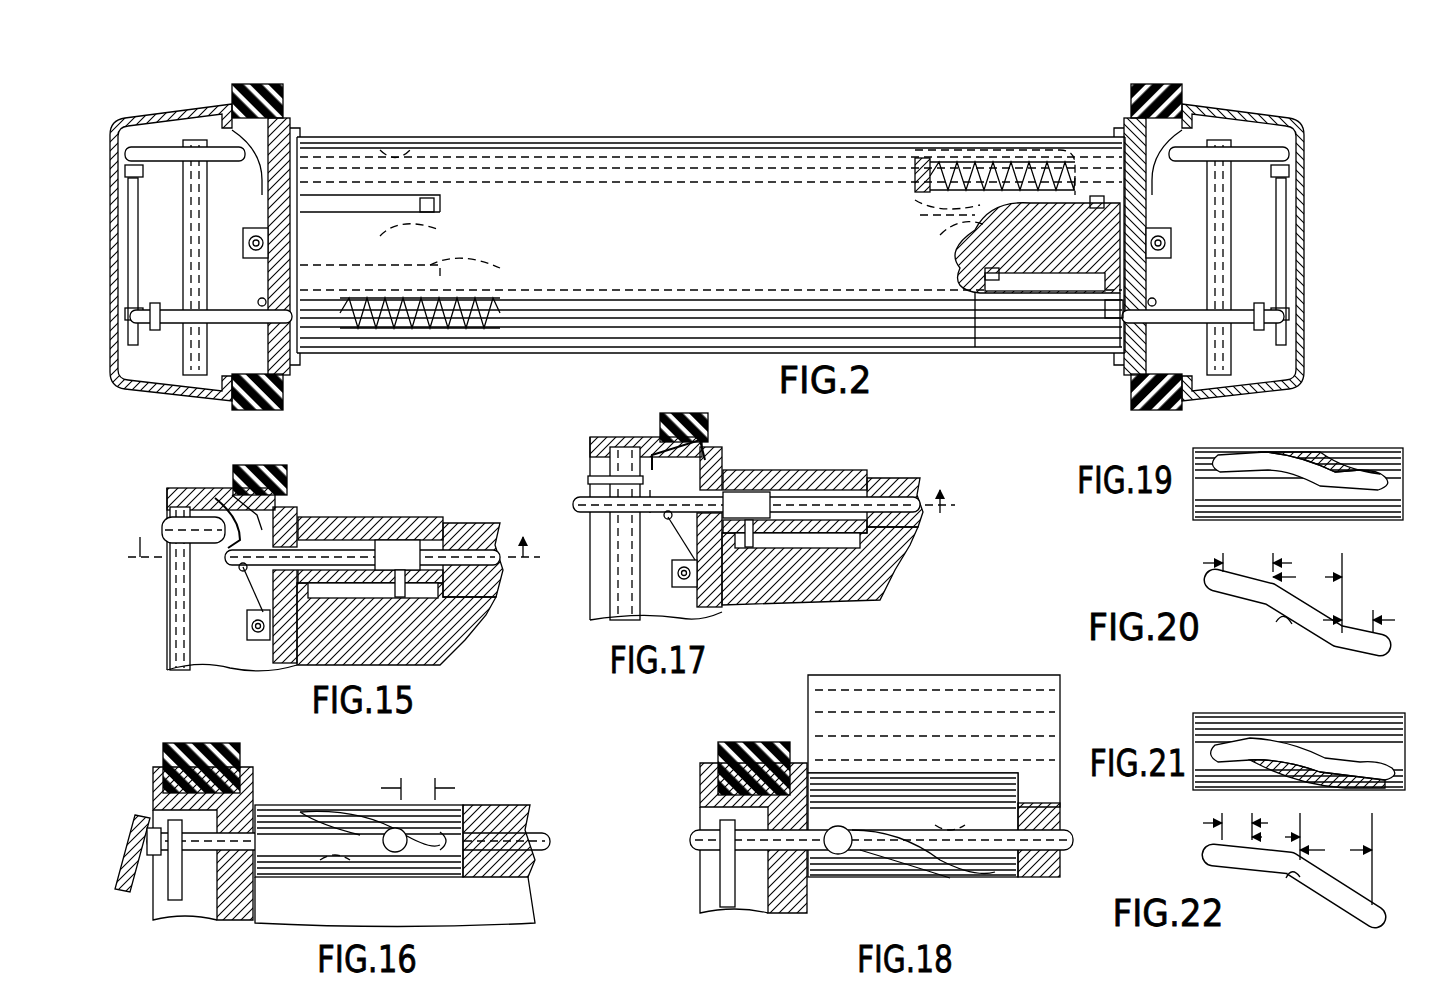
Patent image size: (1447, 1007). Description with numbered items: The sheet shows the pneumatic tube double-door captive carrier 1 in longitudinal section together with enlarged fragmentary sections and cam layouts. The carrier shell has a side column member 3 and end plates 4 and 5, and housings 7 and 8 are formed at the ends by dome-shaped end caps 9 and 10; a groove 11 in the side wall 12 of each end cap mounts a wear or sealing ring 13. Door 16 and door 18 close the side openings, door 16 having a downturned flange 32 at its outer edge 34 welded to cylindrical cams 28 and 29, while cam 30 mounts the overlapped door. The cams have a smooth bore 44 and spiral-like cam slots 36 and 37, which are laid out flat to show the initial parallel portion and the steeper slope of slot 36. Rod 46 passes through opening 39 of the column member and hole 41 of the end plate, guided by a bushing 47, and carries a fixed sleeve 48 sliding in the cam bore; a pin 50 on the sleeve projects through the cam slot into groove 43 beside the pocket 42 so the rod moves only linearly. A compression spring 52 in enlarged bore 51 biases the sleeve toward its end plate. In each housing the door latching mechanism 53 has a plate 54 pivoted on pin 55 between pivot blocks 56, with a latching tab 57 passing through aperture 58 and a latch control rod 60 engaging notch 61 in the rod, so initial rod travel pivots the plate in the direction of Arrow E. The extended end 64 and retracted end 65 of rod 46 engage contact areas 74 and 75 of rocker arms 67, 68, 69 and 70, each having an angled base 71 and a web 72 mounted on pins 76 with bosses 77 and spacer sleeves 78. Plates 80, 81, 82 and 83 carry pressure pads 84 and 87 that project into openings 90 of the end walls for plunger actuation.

In FIG. 2, the carrier 1 is at (770, 125).
In FIG. 2, the side column member 3 is at (600, 290).
In FIG. 15, the side column member 3 is at (425, 630).
In FIG. 17, the side column member 3 is at (880, 560).
In FIG. 2, the end plate 4 is at (1125, 150).
In FIG. 2, the end plate 5 is at (292, 130).
In FIG. 15, the end plate 5 is at (285, 663).
In FIG. 17, the end plate 5 is at (712, 607).
In FIG. 16, the end plate 5 is at (235, 912).
In FIG. 18, the end plate 5 is at (790, 897).
In FIG. 2, the housing 7 is at (1310, 130).
In FIG. 2, the housing 8 is at (145, 120).
In FIG. 2, the end cap 9 is at (1300, 345).
In FIG. 2, the end cap 10 is at (135, 380).
In FIG. 2, the groove 11 is at (257, 410).
In FIG. 16, the groove 11 is at (175, 775).
In FIG. 18, the groove 11 is at (722, 765).
In FIG. 2, the side wall 12 is at (217, 395).
In FIG. 17, the side wall 12 is at (635, 435).
In FIG. 2, the wear or sealing ring 13 is at (270, 90).
In FIG. 15, the wear or sealing ring 13 is at (280, 472).
In FIG. 17, the wear or sealing ring 13 is at (700, 418).
In FIG. 16, the wear or sealing ring 13 is at (190, 750).
In FIG. 18, the wear or sealing ring 13 is at (755, 745).
In FIG. 2, the door 16 is at (565, 137).
In FIG. 15, the door 16 is at (470, 520).
In FIG. 17, the door 16 is at (797, 506).
In FIG. 16, the door 16 is at (520, 905).
In FIG. 18, the door 16 is at (1000, 685).
In FIG. 2, the door 18 is at (880, 353).
In FIG. 2, the cam 28 is at (1000, 155).
In FIG. 19, the cam 28 is at (1355, 450).
In FIG. 2, the cam 29 is at (420, 160).
In FIG. 15, the cam 29 is at (380, 520).
In FIG. 17, the cam 29 is at (845, 475).
In FIG. 16, the cam 29 is at (460, 805).
In FIG. 18, the cam 29 is at (1010, 878).
In FIG. 21, the cam 30 is at (1345, 715).
In FIG. 2, the downturned flange 32 is at (373, 140).
In FIG. 15, the downturned flange 32 is at (405, 520).
In FIG. 17, the downturned flange 32 is at (780, 470).
In FIG. 16, the downturned flange 32 is at (425, 877).
In FIG. 18, the downturned flange 32 is at (900, 780).
In FIG. 2, the outer edge 34 is at (720, 137).
In FIG. 16, the outer edge 34 is at (545, 855).
In FIG. 18, the outer edge 34 is at (1038, 775).
In FIG. 15, the cam slot 36 is at (430, 587).
In FIG. 17, the cam slot 36 is at (790, 548).
In FIG. 16, the cam slot 36 is at (345, 815).
In FIG. 18, the cam slot 36 is at (893, 862).
In FIG. 19, the cam slot 36 is at (1345, 495).
In FIG. 20, the cam slot 36 is at (1284, 626).
In FIG. 21, the cam slot 37 is at (1240, 740).
In FIG. 22, the cam slot 37 is at (1292, 882).
In FIG. 2, the opening 39 is at (715, 180).
In FIG. 15, the opening 39 is at (485, 555).
In FIG. 17, the opening 39 is at (915, 500).
In FIG. 16, the opening 39 is at (505, 835).
In FIG. 18, the opening 39 is at (1065, 850).
In FIG. 16, the hole 41 is at (225, 865).
In FIG. 18, the hole 41 is at (790, 860).
In FIG. 2, the pocket 42 is at (960, 207).
In FIG. 15, the pocket 42 is at (420, 577).
In FIG. 17, the pocket 42 is at (870, 540).
In FIG. 2, the groove 43 is at (400, 235).
In FIG. 15, the groove 43 is at (365, 600).
In FIG. 17, the groove 43 is at (850, 548).
In FIG. 2, the bore 44 is at (395, 158).
In FIG. 15, the bore 44 is at (330, 585).
In FIG. 17, the bore 44 is at (860, 495).
In FIG. 16, the bore 44 is at (330, 860).
In FIG. 18, the bore 44 is at (950, 825).
In FIG. 19, the bore 44 is at (1395, 505).
In FIG. 21, the bore 44 is at (1400, 742).
In FIG. 2, the rod 46 is at (630, 165).
In FIG. 15, the rod 46 is at (480, 562).
In FIG. 17, the rod 46 is at (895, 505).
In FIG. 16, the rod 46 is at (548, 842).
In FIG. 18, the rod 46 is at (672, 848).
In FIG. 2, the bushing 47 is at (290, 300).
In FIG. 17, the bushing 47 is at (712, 490).
In FIG. 16, the bushing 47 is at (240, 825).
In FIG. 18, the bushing 47 is at (800, 862).
In FIG. 2, the sleeve 48 is at (392, 176).
In FIG. 15, the sleeve 48 is at (405, 545).
In FIG. 17, the sleeve 48 is at (760, 500).
In FIG. 16, the sleeve 48 is at (432, 848).
In FIG. 18, the sleeve 48 is at (855, 820).
In FIG. 2, the pin 50 is at (436, 212).
In FIG. 15, the pin 50 is at (400, 592).
In FIG. 17, the pin 50 is at (748, 548).
In FIG. 16, the pin 50 is at (395, 850).
In FIG. 18, the pin 50 is at (840, 852).
In FIG. 2, the enlarged bore 51 is at (920, 160).
In FIG. 2, the compression spring 52 is at (940, 162).
In FIG. 2, the door latching mechanism 53 is at (240, 243).
In FIG. 2, the plate 54 is at (1140, 282).
In FIG. 15, the plate 54 is at (190, 497).
In FIG. 2, the pin 55 is at (262, 245).
In FIG. 15, the pin 55 is at (258, 645).
In FIG. 17, the pin 55 is at (684, 590).
In FIG. 15, the pivot block 56 is at (258, 640).
In FIG. 2, the latching tab 57 is at (298, 137).
In FIG. 15, the latching tab 57 is at (235, 495).
In FIG. 17, the latching tab 57 is at (680, 440).
In FIG. 2, the aperture 58 is at (295, 380).
In FIG. 15, the aperture 58 is at (297, 510).
In FIG. 17, the aperture 58 is at (715, 455).
In FIG. 2, the door latch control rod 60 is at (1150, 308).
In FIG. 15, the door latch control rod 60 is at (243, 568).
In FIG. 17, the door latch control rod 60 is at (668, 522).
In FIG. 16, the door latch control rod 60 is at (175, 900).
In FIG. 18, the door latch control rod 60 is at (725, 897).
In FIG. 15, the notch 61 is at (248, 563).
In FIG. 17, the notch 61 is at (600, 517).
In FIG. 16, the notch 61 is at (163, 840).
In FIG. 2, the extended end 64 is at (1295, 192).
In FIG. 2, the retracted end 65 is at (255, 180).
In FIG. 17, the retracted end 65 is at (580, 500).
In FIG. 2, the rocker arm 67 is at (1290, 125).
In FIG. 2, the rocker arm 68 is at (158, 152).
In FIG. 15, the rocker arm 68 is at (165, 521).
In FIG. 16, the rocker arm 68 is at (125, 845).
In FIG. 2, the rocker arm 69 is at (1275, 370).
In FIG. 2, the rocker arm 70 is at (130, 350).
In FIG. 2, the angled base 71 is at (175, 365).
In FIG. 16, the angled base 71 is at (120, 880).
In FIG. 2, the web 72 is at (1260, 140).
In FIG. 17, the web 72 is at (600, 478).
In FIG. 2, the contact area 74 is at (245, 305).
In FIG. 15, the contact area 74 is at (215, 557).
In FIG. 16, the contact area 74 is at (135, 820).
In FIG. 2, the contact area 75 is at (1275, 188).
In FIG. 2, the pin 76 is at (192, 228).
In FIG. 15, the pin 76 is at (180, 655).
In FIG. 17, the pin 76 is at (615, 600).
In FIG. 2, the boss 77 is at (195, 118).
In FIG. 2, the spacer sleeve 78 is at (190, 288).
In FIG. 2, the plate 80 is at (1282, 232).
In FIG. 2, the plate 81 is at (130, 160).
In FIG. 2, the plate 82 is at (1282, 330).
In FIG. 2, the plate 83 is at (130, 320).
In FIG. 2, the pressure pad 84 is at (1292, 262).
In FIG. 2, the pressure pad 87 is at (125, 250).
In FIG. 2, the opening 90 is at (1305, 178).
In FIG. 15, the Arrow E is at (248, 600).